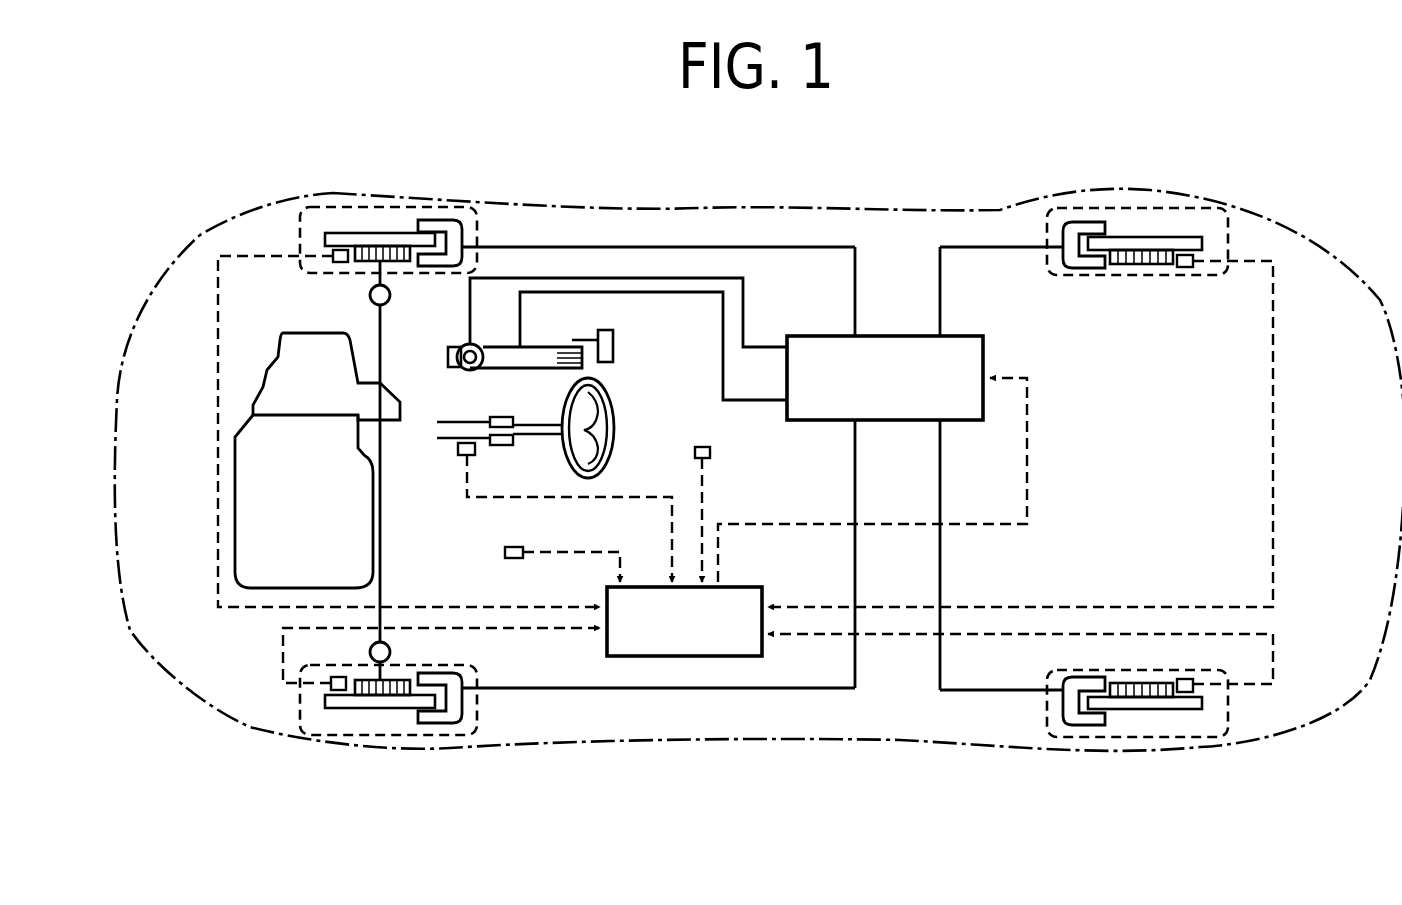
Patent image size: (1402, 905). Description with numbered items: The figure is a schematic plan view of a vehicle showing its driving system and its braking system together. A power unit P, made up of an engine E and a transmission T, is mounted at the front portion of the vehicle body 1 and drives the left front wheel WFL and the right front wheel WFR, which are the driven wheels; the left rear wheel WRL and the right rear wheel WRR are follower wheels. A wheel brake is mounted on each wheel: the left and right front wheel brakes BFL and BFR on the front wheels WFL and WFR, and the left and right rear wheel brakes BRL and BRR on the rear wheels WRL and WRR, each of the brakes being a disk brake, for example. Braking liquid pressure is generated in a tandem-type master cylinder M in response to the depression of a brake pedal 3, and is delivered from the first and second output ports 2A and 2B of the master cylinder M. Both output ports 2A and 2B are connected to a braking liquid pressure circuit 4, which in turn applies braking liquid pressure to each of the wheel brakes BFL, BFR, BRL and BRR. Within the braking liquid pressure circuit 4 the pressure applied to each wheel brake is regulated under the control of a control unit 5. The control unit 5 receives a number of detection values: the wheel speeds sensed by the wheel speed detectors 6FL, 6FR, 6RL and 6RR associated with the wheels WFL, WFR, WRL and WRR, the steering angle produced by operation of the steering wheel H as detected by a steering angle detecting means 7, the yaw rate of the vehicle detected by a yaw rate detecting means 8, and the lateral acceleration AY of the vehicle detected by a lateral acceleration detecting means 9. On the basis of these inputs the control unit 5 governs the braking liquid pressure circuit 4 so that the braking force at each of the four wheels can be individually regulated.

The vehicle body 1 is at (765, 740).
The right front wheel WFR is at (350, 202).
The left front wheel WFL is at (355, 735).
The right rear wheel WRR is at (1123, 210).
The left rear wheel WRL is at (1118, 737).
The right front wheel brake BFR is at (440, 218).
The left front wheel brake BFL is at (446, 728).
The right rear wheel brake BRR is at (1062, 214).
The left rear wheel brake BRL is at (1074, 728).
The wheel speed detector 6FR is at (333, 256).
The wheel speed detector 6FL is at (331, 683).
The wheel speed detector 6RR is at (1185, 267).
The wheel speed detector 6RL is at (1185, 693).
The transmission T is at (323, 394).
The engine E is at (308, 529).
The power unit P is at (232, 493).
The first output port 2A is at (522, 347).
The second output port 2B is at (465, 346).
The brake pedal 3 is at (613, 340).
The master cylinder M is at (518, 364).
The steering wheel H is at (600, 426).
The steering angle detecting means 7 is at (457, 448).
The yaw rate detecting means 8 is at (710, 452).
The lateral acceleration detecting means 9 is at (503, 553).
The lateral acceleration AY is at (587, 536).
The braking liquid pressure circuit 4 is at (899, 397).
The control unit 5 is at (687, 642).